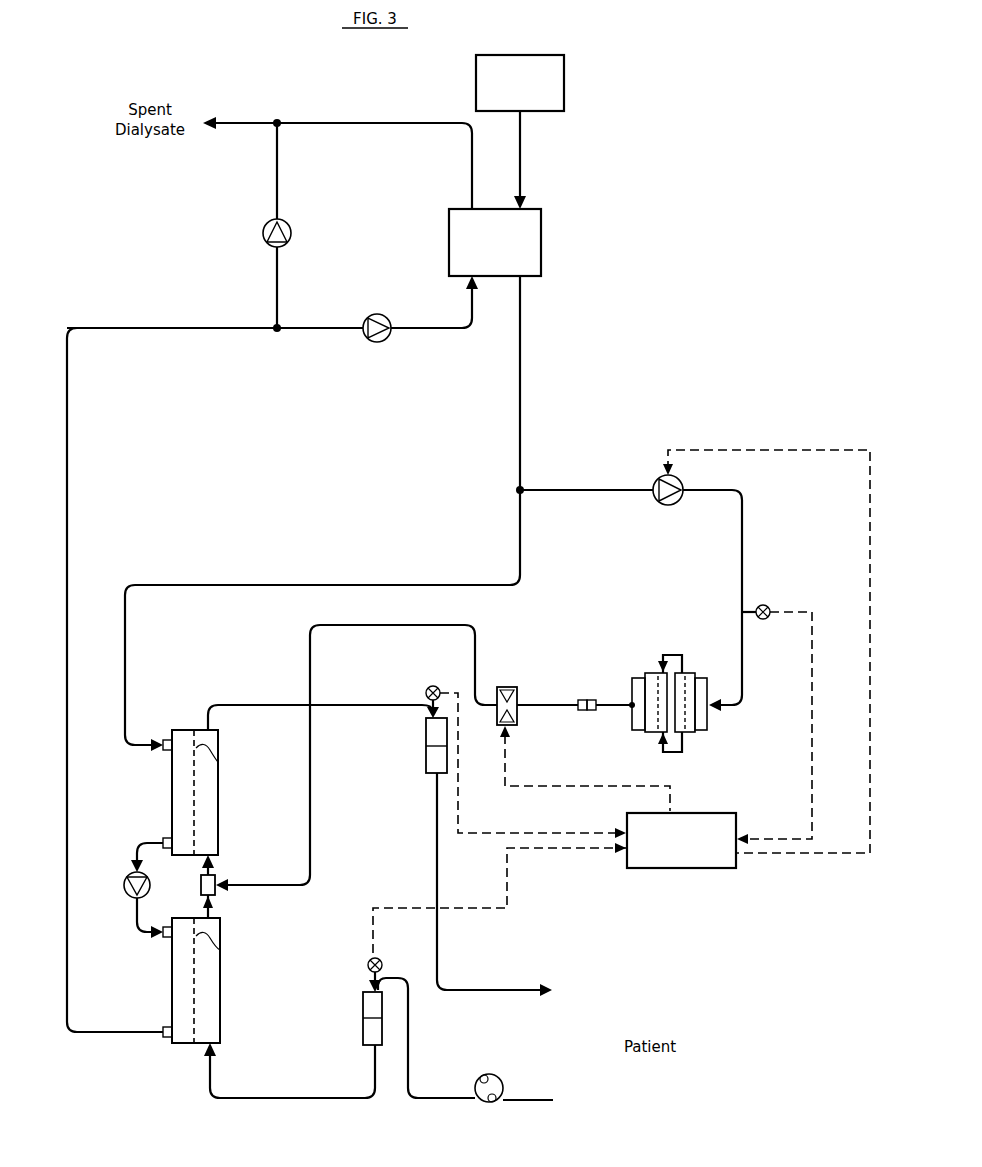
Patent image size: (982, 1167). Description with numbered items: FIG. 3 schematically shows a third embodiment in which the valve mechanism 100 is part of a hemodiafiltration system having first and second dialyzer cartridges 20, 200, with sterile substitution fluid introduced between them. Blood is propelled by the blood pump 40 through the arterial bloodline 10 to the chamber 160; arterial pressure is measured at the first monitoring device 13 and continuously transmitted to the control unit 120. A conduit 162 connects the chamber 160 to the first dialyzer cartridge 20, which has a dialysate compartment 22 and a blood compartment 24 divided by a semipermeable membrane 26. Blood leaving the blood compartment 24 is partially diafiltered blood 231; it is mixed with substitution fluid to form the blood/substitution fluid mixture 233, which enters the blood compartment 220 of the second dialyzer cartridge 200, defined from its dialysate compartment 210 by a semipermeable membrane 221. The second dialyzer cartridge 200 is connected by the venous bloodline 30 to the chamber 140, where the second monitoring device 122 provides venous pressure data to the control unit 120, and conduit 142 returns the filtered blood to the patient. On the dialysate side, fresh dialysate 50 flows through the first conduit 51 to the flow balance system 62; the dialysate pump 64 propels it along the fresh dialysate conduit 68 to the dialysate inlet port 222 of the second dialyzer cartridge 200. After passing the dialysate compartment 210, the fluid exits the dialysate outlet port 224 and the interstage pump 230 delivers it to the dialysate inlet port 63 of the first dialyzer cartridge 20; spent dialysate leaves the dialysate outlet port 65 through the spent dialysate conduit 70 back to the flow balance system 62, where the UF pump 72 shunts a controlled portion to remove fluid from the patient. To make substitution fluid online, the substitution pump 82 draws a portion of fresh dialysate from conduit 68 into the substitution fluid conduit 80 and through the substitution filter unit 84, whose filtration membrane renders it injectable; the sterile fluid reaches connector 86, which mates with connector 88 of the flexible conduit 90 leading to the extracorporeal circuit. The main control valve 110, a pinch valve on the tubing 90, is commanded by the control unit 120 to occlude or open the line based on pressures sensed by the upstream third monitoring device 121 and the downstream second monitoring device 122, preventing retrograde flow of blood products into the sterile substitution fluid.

The arterial bloodline 10 is at (432, 1100).
The first monitoring device 13 is at (382, 962).
The first dialyzer cartridge 20 is at (192, 1005).
The dialysate compartment 22 is at (186, 978).
The blood compartment 24 is at (212, 1005).
The semipermeable membrane 26 is at (220, 950).
The venous bloodline 30 is at (341, 705).
The blood pump 40 is at (478, 1076).
The fresh dialysate 50 is at (564, 80).
The first conduit 51 is at (521, 160).
The flow balance system 62 is at (541, 250).
The dialysate inlet port 63 is at (190, 890).
The dialysate pump 64 is at (385, 340).
The dialysate outlet port 65 is at (166, 1038).
The fresh dialysate conduit 68 is at (522, 370).
The spent dialysate conduit 70 is at (67, 712).
The UF pump 72 is at (291, 226).
The substitution fluid conduit 80 is at (598, 488).
The substitution pump 82 is at (655, 503).
The substitution filter unit 84 is at (645, 678).
The connector 86 is at (592, 711).
The connector 88 is at (580, 700).
The conduit 90 is at (310, 655).
The valve mechanism 100 is at (562, 822).
The main control valve 110 is at (507, 686).
The control unit 120 is at (660, 868).
The third monitoring device 121 is at (765, 620).
The second monitoring device 122 is at (428, 688).
The chamber 140 is at (426, 760).
The conduit 142 is at (436, 835).
The chamber 160 is at (363, 1036).
The conduit 162 is at (209, 1080).
The second dialyzer cartridge 200 is at (194, 770).
The dialysate compartment 210 is at (180, 787).
The blood compartment 220 is at (208, 813).
The semipermeable membrane 221 is at (218, 762).
The dialysate inlet port 222 is at (166, 738).
The dialysate outlet port 224 is at (162, 838).
The interstage pump 230 is at (123, 887).
The partially diafiltered blood 231 is at (212, 905).
The blood/substitution fluid mixture 233 is at (214, 868).